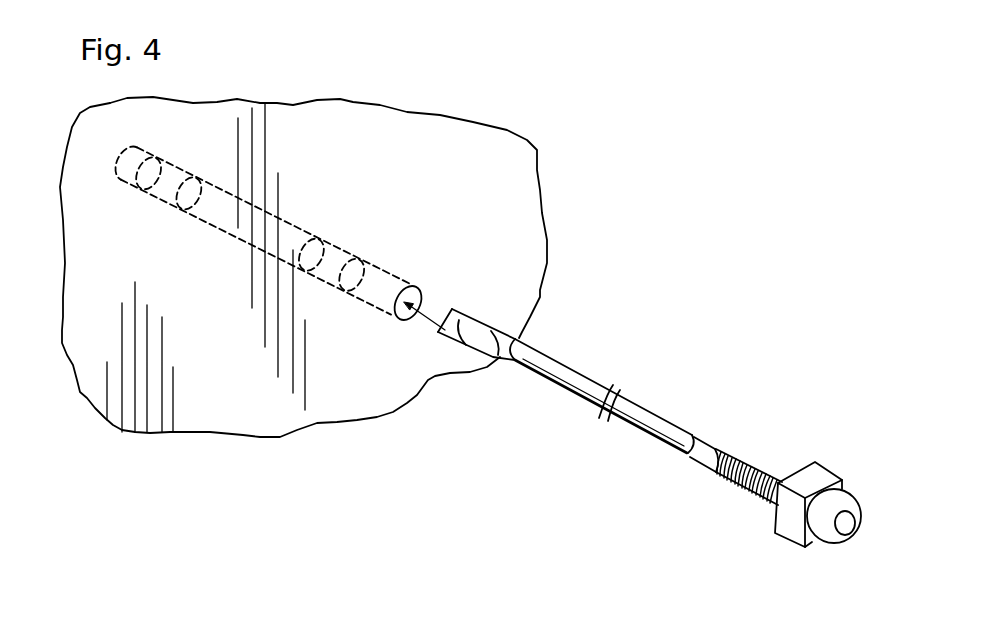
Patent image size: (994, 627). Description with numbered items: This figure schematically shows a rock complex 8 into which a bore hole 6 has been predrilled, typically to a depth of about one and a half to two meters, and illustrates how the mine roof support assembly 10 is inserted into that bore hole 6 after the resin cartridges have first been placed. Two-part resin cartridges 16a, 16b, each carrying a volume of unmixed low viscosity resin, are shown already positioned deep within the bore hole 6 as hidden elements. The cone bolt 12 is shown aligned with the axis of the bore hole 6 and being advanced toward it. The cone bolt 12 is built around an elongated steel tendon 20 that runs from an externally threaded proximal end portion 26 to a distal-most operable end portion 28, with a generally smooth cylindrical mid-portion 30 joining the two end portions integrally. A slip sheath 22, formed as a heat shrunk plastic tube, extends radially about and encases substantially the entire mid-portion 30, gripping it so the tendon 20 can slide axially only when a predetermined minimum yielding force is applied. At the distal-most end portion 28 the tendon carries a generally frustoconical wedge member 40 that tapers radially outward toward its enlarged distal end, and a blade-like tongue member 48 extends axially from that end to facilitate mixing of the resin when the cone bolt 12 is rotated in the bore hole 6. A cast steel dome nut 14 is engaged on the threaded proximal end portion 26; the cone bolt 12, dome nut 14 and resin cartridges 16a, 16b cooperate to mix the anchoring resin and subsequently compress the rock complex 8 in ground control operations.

The rock complex 8 is at (462, 193).
The bore hole 6 is at (413, 322).
The mine roof support assembly 10 is at (653, 260).
The cone bolt 12 is at (748, 448).
The cast steel dome nut 14 is at (786, 531).
The two-part resin cartridge 16a is at (162, 188).
The two-part resin cartridge 16b is at (328, 283).
The elongated steel tendon 20 is at (707, 466).
The slip sheath 22 is at (640, 417).
The externally threaded proximal end portion 26 is at (740, 496).
The distal-most operable end portion 28 is at (476, 314).
The cylindrical mid-portion 30 is at (662, 384).
The wedge member 40 is at (473, 340).
The tongue member 48 is at (449, 331).